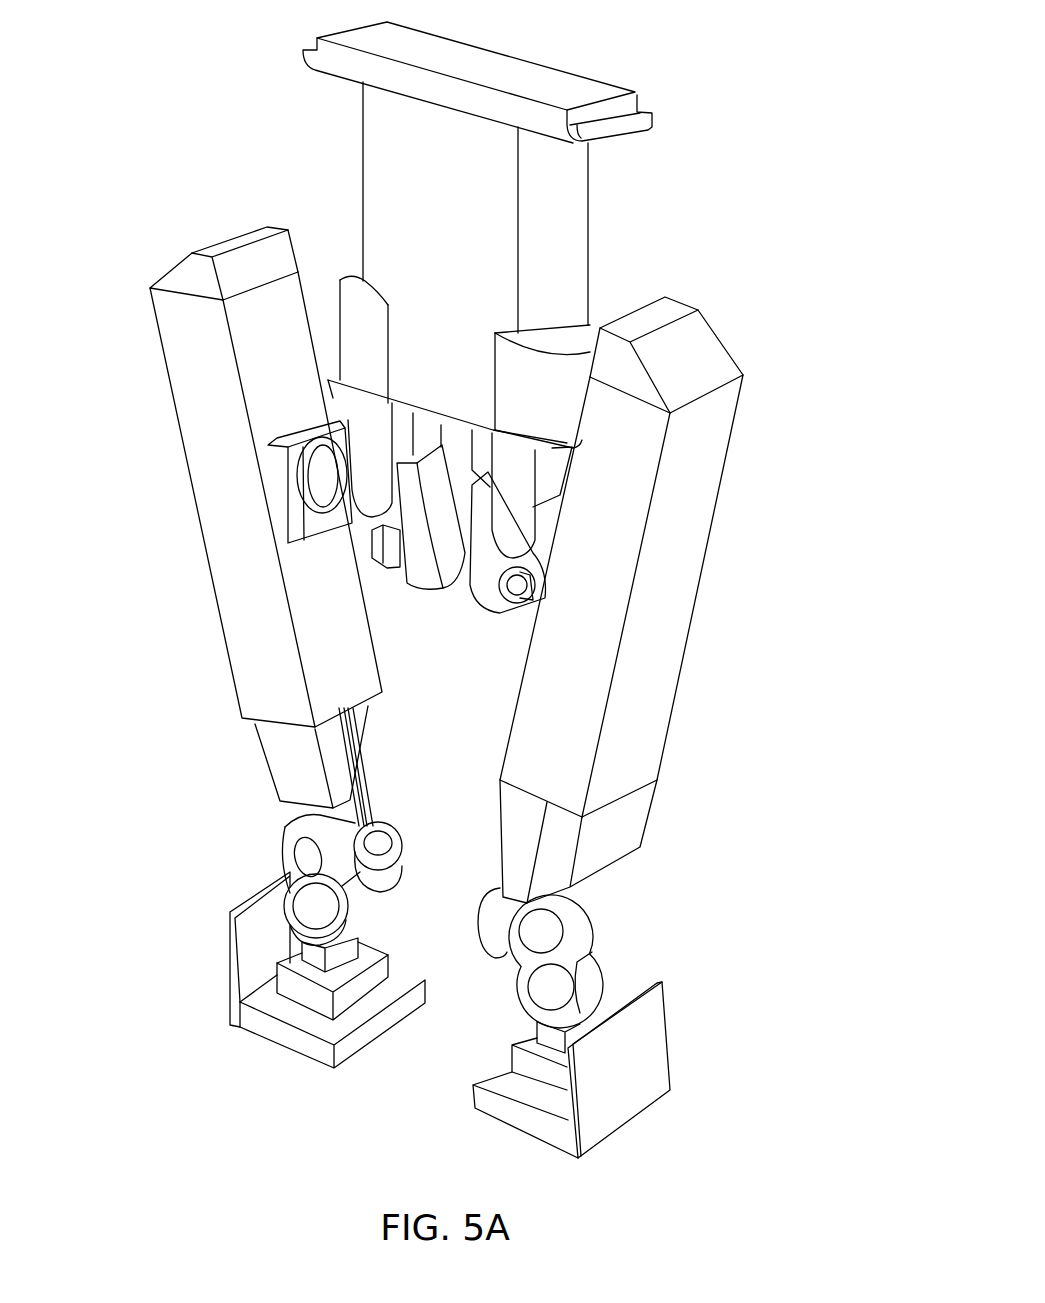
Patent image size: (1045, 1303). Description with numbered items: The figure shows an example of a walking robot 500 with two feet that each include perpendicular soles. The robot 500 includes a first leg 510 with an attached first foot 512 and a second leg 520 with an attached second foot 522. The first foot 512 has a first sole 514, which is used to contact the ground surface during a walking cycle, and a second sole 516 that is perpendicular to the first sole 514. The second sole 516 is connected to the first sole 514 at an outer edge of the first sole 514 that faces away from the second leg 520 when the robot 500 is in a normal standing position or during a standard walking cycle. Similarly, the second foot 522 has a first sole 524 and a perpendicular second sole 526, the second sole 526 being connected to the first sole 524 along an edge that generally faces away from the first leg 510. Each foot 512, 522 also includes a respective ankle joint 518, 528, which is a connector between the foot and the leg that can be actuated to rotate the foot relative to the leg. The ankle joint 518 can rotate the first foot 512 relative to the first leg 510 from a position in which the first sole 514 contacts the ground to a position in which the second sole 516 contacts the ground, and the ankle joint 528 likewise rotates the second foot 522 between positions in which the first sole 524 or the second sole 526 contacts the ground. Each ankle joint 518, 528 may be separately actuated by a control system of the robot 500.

The robot 500 is at (668, 185).
The first leg 510 is at (225, 475).
The first foot 512 is at (262, 862).
The first sole 514 is at (276, 1035).
The second sole 516 is at (230, 956).
The ankle joint 518 is at (359, 917).
The second leg 520 is at (680, 545).
The second foot 522 is at (617, 930).
The first sole 524 is at (502, 1113).
The second sole 526 is at (652, 1062).
The ankle joint 528 is at (597, 988).